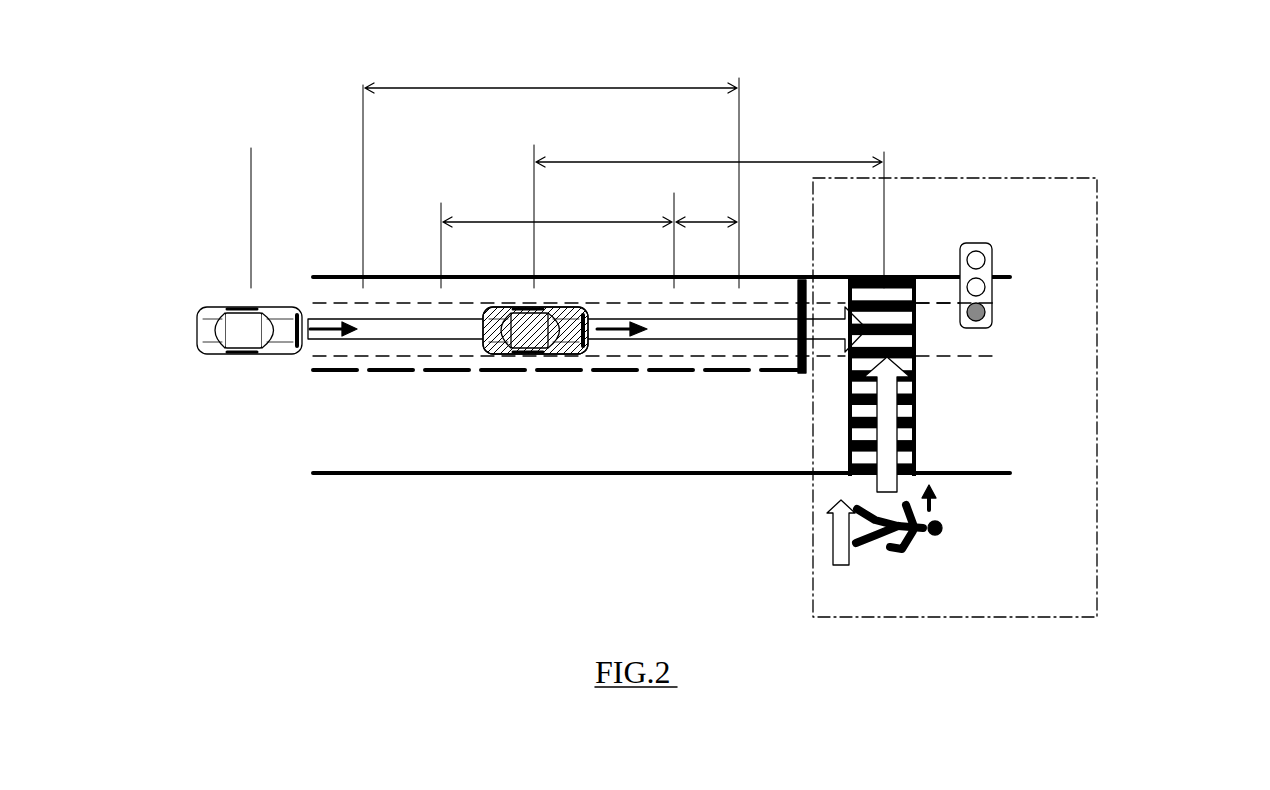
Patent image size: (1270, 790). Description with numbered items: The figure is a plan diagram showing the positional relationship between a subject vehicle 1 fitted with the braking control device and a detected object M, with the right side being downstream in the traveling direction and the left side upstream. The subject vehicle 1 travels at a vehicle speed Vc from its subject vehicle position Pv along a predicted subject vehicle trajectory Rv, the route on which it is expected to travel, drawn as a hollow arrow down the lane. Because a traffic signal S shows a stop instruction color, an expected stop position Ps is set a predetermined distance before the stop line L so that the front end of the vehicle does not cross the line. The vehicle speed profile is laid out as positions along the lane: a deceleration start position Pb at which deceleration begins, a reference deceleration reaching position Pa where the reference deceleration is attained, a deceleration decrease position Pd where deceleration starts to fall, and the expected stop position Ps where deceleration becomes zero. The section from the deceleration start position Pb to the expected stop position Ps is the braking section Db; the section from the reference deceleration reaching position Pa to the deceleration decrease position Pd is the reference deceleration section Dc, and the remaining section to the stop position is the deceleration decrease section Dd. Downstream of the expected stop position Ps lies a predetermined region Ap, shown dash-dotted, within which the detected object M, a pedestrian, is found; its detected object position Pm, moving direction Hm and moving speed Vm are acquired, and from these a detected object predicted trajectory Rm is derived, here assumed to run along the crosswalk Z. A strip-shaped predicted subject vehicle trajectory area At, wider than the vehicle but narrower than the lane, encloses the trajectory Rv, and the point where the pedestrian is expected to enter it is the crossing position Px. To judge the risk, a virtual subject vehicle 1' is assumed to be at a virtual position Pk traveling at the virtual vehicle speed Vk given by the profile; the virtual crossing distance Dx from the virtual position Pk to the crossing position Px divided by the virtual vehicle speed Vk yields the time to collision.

The subject vehicle 1 is at (237, 391).
The virtual subject vehicle 1' is at (525, 380).
The vehicle speed Vc is at (335, 320).
The virtual vehicle speed Vk is at (613, 320).
The subject vehicle position Pv is at (254, 204).
The deceleration start position Pb is at (361, 172).
The reference deceleration reaching position Pa is at (440, 234).
The virtual position Pk is at (535, 205).
The deceleration decrease position Pd is at (671, 230).
The expected stop position Ps is at (737, 170).
The crossing position Px is at (885, 206).
The braking section Db is at (551, 77).
The virtual crossing distance Dx is at (709, 153).
The reference deceleration section Dc is at (557, 212).
The deceleration decrease section Dd is at (706, 212).
The predicted subject vehicle trajectory Rv is at (710, 340).
The stop line L is at (797, 373).
The predetermined region Ap is at (1097, 250).
The crosswalk Z is at (916, 443).
The detected object predicted trajectory Rm is at (916, 423).
The traffic signal S is at (992, 248).
The predicted subject vehicle trajectory area At is at (937, 303).
The detected object M is at (900, 550).
The detected object position Pm is at (954, 529).
The moving speed Vm is at (935, 505).
The moving direction Hm is at (844, 547).